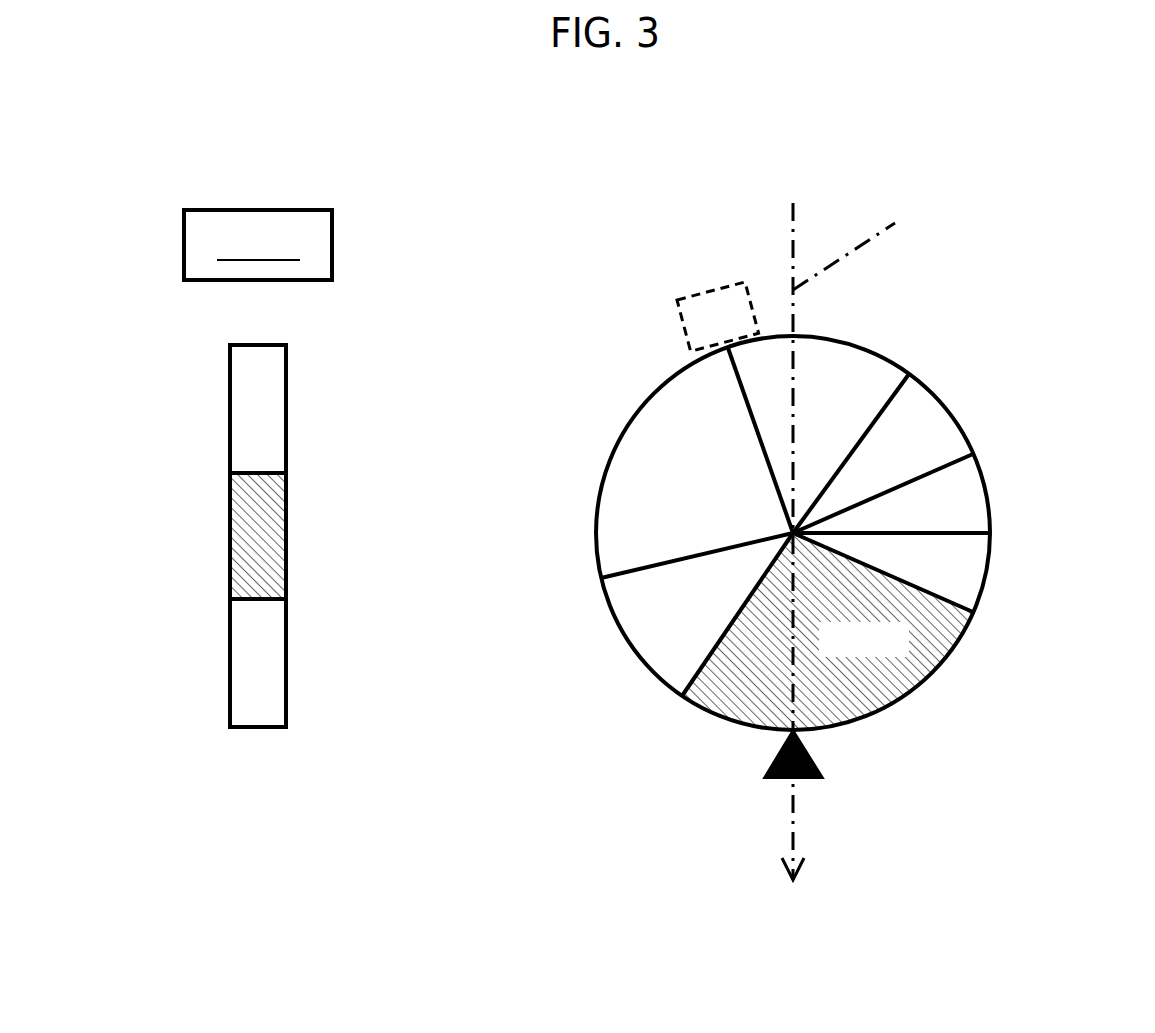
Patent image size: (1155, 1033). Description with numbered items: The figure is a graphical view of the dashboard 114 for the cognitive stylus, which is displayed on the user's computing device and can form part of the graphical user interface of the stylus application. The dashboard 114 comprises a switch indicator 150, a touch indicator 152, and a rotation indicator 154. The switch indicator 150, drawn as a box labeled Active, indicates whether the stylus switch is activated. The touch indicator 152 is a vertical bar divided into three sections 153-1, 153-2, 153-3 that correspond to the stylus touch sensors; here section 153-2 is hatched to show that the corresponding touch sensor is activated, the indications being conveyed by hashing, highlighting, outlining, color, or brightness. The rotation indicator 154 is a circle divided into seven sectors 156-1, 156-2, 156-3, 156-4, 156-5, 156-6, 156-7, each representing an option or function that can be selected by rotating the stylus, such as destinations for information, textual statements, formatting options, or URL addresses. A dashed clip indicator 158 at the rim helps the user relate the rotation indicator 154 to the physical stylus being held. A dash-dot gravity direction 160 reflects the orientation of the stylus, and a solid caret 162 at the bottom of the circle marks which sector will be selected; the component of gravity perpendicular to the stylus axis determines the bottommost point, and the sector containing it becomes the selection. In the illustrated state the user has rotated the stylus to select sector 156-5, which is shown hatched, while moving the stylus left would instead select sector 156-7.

The dashboard 114 is at (832, 186).
The switch indicator 150 is at (337, 243).
The touch indicator 152 is at (288, 382).
The section 153-1 is at (288, 653).
The section 153-2 is at (288, 533).
The section 153-3 is at (288, 428).
The rotation indicator 154 is at (858, 341).
The sector 156-1 is at (878, 397).
The sector 156-2 is at (960, 427).
The sector 156-3 is at (988, 497).
The sector 156-4 is at (988, 572).
The sector 156-5 is at (901, 653).
The sector 156-6 is at (718, 615).
The sector 156-7 is at (718, 477).
The clip indicator 158 is at (708, 285).
The gravity direction 160 is at (874, 254).
The caret 162 is at (777, 755).